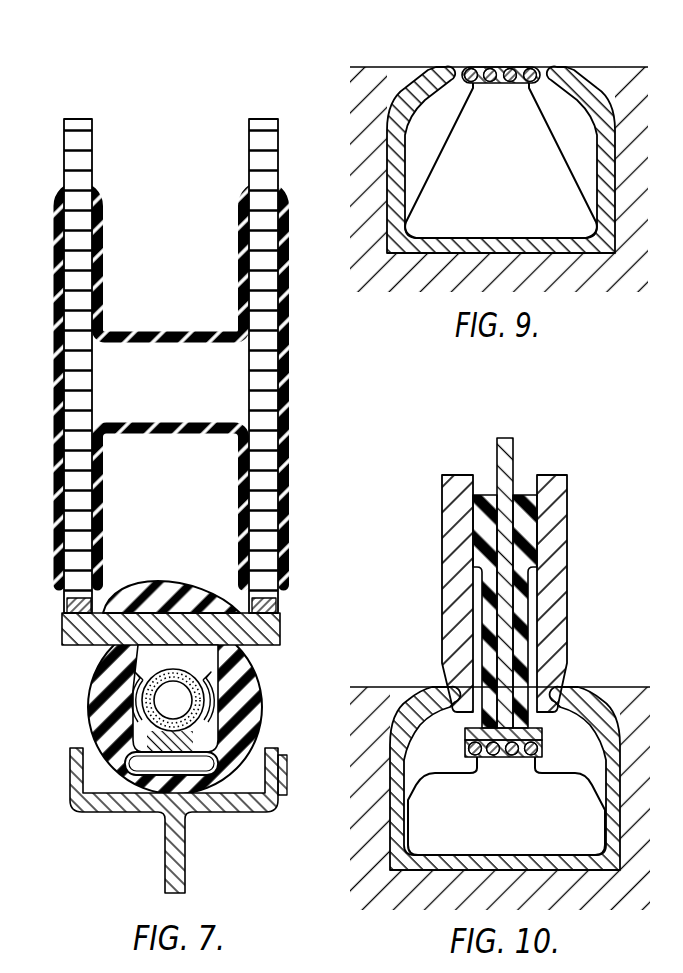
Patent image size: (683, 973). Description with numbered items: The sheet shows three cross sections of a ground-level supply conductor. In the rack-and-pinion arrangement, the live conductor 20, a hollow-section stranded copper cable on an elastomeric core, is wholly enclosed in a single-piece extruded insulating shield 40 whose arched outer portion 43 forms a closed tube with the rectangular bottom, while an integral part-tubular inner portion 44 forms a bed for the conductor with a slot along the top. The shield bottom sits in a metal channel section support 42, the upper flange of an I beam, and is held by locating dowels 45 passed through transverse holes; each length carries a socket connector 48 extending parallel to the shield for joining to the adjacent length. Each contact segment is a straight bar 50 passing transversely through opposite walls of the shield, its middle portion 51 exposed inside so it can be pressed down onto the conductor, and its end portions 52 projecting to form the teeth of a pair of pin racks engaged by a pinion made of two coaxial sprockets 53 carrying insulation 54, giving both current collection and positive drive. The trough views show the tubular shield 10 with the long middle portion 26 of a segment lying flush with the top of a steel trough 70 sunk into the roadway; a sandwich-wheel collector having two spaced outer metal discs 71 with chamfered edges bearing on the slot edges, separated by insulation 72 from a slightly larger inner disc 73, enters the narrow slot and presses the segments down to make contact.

In FIG. 9, the tubular shield 10 is at (562, 153).
In FIG. 10, the tubular shield 10 is at (428, 776).
In FIG. 7, the live conductor 20 is at (162, 706).
In FIG. 9, the long middle portion 26 is at (508, 66).
In FIG. 10, the long middle portion 26 is at (543, 749).
In FIG. 7, the insulating shield 40 is at (57, 668).
In FIG. 7, the channel section support 42 is at (76, 792).
In FIG. 7, the outer portion 43 is at (107, 693).
In FIG. 7, the inner portion 44 is at (138, 708).
In FIG. 7, the locating dowels 45 is at (287, 762).
In FIG. 7, the female plug-and-socket connector 48 is at (130, 776).
In FIG. 7, the straight bar 50 is at (131, 579).
In FIG. 7, the middle portion 51 is at (164, 611).
In FIG. 7, the end portions 52 is at (73, 628).
In FIG. 7, the sprockets 53 is at (262, 334).
In FIG. 7, the insulation 54 is at (284, 381).
In FIG. 9, the trough 70 is at (600, 100).
In FIG. 10, the trough 70 is at (612, 701).
In FIG. 10, the outer metal discs 71 is at (560, 641).
In FIG. 10, the insulation 72 is at (520, 592).
In FIG. 10, the inner annulus or disc 73 is at (505, 462).